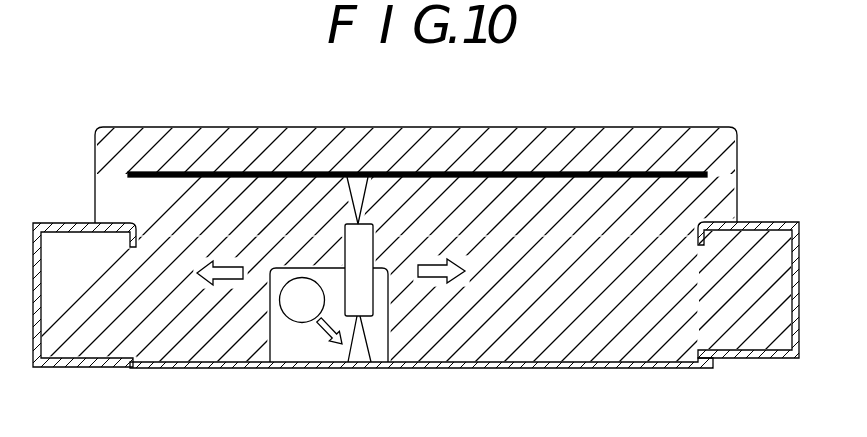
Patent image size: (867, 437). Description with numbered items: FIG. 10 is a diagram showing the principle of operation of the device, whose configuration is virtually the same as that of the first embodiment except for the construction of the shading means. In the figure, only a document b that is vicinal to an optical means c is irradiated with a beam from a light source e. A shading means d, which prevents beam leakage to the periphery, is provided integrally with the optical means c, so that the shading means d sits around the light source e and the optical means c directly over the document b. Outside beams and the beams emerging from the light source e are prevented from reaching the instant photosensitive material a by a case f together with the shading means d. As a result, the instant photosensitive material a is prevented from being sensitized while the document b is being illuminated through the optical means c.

The instant photosensitive material a is at (553, 172).
The document b is at (505, 368).
The optical means c is at (365, 302).
The shading means d is at (268, 338).
The light source e is at (303, 312).
The case f is at (800, 250).